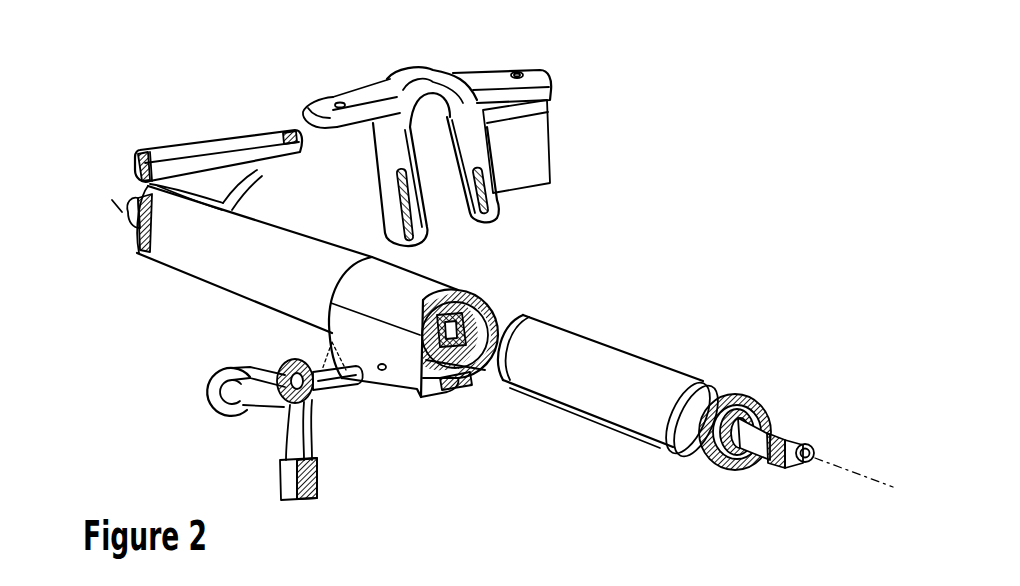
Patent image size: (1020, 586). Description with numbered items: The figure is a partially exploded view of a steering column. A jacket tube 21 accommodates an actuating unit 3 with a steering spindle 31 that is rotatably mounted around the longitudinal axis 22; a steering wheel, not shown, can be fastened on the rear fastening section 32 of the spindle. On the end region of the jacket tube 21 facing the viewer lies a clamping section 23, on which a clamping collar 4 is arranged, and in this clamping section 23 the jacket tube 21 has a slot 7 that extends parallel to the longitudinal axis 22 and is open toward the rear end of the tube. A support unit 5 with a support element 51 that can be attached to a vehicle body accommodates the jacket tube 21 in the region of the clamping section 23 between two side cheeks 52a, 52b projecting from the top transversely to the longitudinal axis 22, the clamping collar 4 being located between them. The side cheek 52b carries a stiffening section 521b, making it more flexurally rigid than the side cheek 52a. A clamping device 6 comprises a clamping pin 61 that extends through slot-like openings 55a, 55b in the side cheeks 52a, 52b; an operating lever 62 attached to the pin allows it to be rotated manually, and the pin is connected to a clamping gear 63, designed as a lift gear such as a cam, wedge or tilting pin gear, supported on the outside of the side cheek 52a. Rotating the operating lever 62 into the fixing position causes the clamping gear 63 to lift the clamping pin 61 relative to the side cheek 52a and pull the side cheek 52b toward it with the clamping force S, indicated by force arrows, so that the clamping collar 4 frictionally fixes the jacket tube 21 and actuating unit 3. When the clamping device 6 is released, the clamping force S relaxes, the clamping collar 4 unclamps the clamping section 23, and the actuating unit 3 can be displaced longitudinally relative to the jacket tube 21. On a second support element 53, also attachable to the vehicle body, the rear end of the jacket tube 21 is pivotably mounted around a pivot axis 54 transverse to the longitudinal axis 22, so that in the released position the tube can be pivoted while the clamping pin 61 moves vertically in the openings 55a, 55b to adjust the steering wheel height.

The jacket tube 21 is at (200, 260).
The longitudinal axis 22 is at (896, 487).
The clamping section 23 is at (474, 330).
The actuating unit 3 is at (623, 373).
The steering spindle 31 is at (733, 425).
The rear fastening section 32 is at (786, 432).
The clamping collar 4 is at (410, 282).
The support unit 5 is at (450, 136).
The support element 51 is at (480, 74).
The side cheek 52a is at (393, 148).
The side cheek 52b is at (472, 146).
The stiffening section 521b is at (520, 126).
The second support element 53 is at (230, 150).
The pivot axis 54 is at (134, 238).
The opening 55a is at (398, 208).
The opening 55b is at (488, 196).
The clamping force S is at (503, 217).
The clamping device 6 is at (311, 433).
The clamping pin 61 is at (345, 378).
The operating lever 62 is at (293, 432).
The clamping gear 63 is at (313, 408).
The slot 7 is at (460, 378).